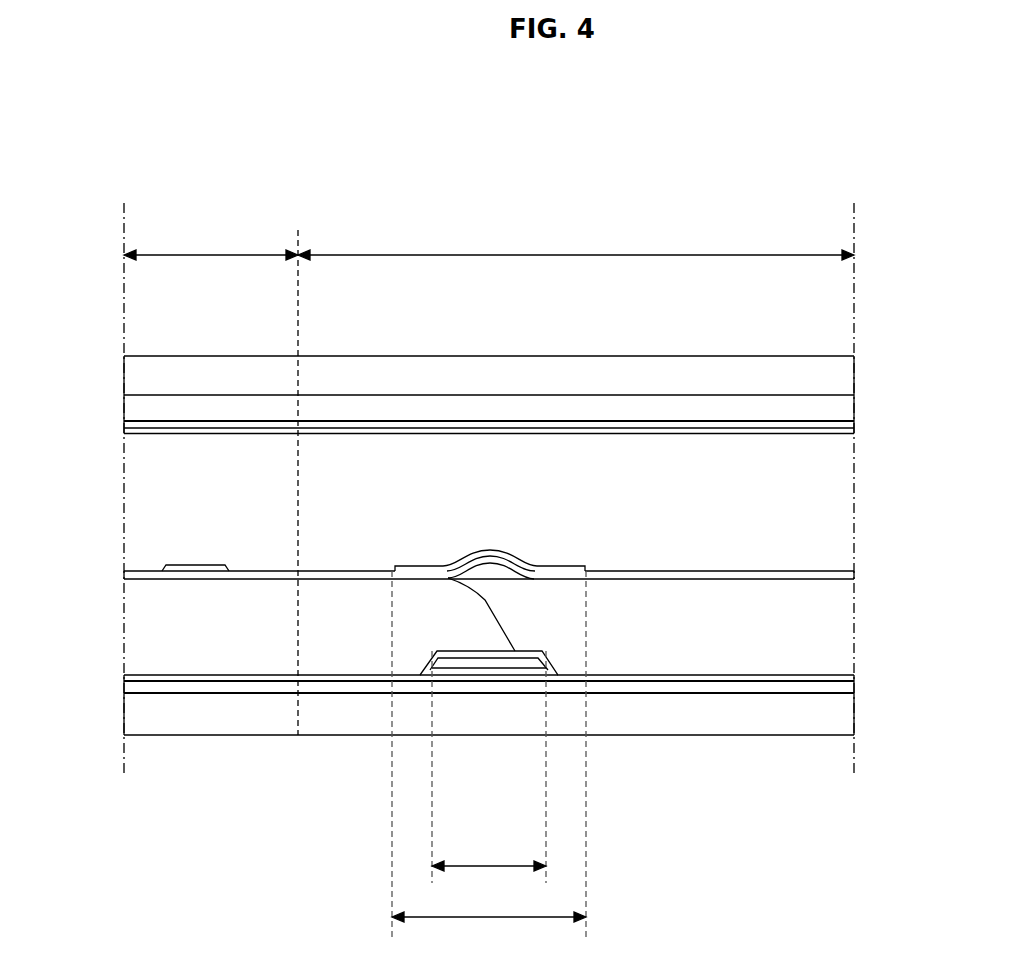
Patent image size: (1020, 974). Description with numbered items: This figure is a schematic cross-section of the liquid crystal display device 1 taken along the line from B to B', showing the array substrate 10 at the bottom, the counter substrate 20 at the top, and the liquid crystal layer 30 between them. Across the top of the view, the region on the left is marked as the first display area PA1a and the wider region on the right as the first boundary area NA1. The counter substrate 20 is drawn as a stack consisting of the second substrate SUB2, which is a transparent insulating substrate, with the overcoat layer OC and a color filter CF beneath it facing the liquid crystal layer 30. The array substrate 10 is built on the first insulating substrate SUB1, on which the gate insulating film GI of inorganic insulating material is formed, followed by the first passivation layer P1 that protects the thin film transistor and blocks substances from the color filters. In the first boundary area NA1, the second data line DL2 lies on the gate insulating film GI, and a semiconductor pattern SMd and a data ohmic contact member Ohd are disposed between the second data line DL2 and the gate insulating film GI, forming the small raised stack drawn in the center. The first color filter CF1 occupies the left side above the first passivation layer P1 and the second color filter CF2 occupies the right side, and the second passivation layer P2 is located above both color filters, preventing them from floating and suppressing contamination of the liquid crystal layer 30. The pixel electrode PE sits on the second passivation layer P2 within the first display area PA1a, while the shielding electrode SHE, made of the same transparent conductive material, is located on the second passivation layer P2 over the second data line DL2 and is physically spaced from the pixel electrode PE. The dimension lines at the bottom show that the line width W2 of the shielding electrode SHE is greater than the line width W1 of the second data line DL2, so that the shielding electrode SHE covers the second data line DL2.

The liquid crystal display device 1 is at (357, 150).
The first display area PA1a is at (211, 244).
The first boundary area NA1 is at (576, 244).
The counter substrate 20 is at (865, 356).
The second substrate SUB2 is at (126, 375).
The overcoat layer OC is at (126, 408).
The color filter CF is at (126, 428).
The liquid crystal layer 30 is at (847, 507).
The array substrate 10 is at (865, 571).
The pixel electrode PE is at (180, 565).
The second passivation layer P2 is at (126, 579).
The shielding electrode SHE is at (565, 567).
The first color filter CF1 is at (126, 630).
The first passivation layer P1 is at (126, 678).
The gate insulating film GI is at (126, 687).
The first insulating substrate SUB1 is at (126, 716).
The second data line DL2 is at (458, 672).
The data ohmic contact member Ohd is at (490, 668).
The semiconductor pattern SMd is at (520, 681).
The second color filter CF2 is at (729, 661).
The section line B is at (124, 799).
The section line B' is at (855, 799).
The line width of the second data line W1 is at (489, 772).
The line width of the shielding electrode W2 is at (489, 757).